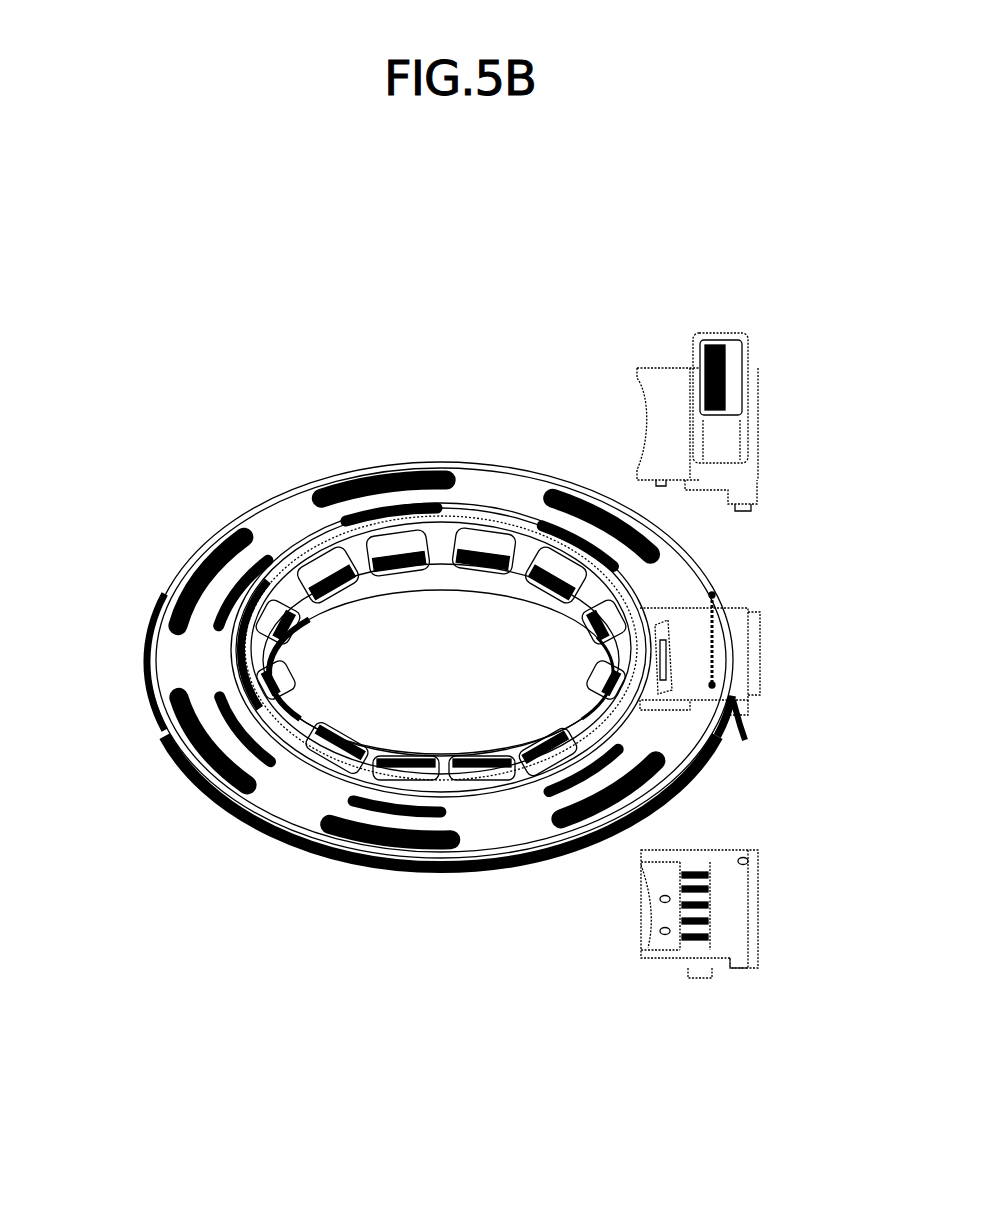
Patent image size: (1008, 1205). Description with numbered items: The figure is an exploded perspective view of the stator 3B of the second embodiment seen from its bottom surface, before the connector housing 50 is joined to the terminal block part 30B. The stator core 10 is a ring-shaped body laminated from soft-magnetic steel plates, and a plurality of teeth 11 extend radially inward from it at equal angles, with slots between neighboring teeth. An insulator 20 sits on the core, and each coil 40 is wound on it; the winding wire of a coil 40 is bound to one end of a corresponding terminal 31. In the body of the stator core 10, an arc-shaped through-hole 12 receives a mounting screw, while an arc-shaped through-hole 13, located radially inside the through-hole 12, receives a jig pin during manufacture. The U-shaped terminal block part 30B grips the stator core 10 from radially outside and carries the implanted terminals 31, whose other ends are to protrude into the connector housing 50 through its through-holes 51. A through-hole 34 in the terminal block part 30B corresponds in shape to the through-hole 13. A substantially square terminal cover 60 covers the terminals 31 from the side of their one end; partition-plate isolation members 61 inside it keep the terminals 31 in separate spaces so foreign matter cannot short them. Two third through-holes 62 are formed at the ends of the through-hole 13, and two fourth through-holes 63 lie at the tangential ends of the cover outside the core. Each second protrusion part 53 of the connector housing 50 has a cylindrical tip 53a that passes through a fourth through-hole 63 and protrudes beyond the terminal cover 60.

The stator 3B is at (455, 322).
The stator core 10 is at (165, 662).
The teeth 11 is at (543, 575).
The through-hole 12 is at (430, 527).
The through-hole 13 is at (235, 603).
The insulator 20 is at (400, 533).
The coil 40 is at (490, 522).
The connector housing 50 is at (660, 378).
The through-holes 51 is at (715, 390).
The second protrusion part 53 is at (742, 492).
The tip 53a is at (750, 513).
The terminal block part 30B is at (740, 650).
The terminals 31 is at (720, 602).
The through-hole 34 is at (668, 690).
The terminal cover 60 is at (695, 978).
The isolation members 61 is at (702, 912).
The third through-hole 62 is at (745, 858).
The fourth through-hole 63 is at (662, 899).